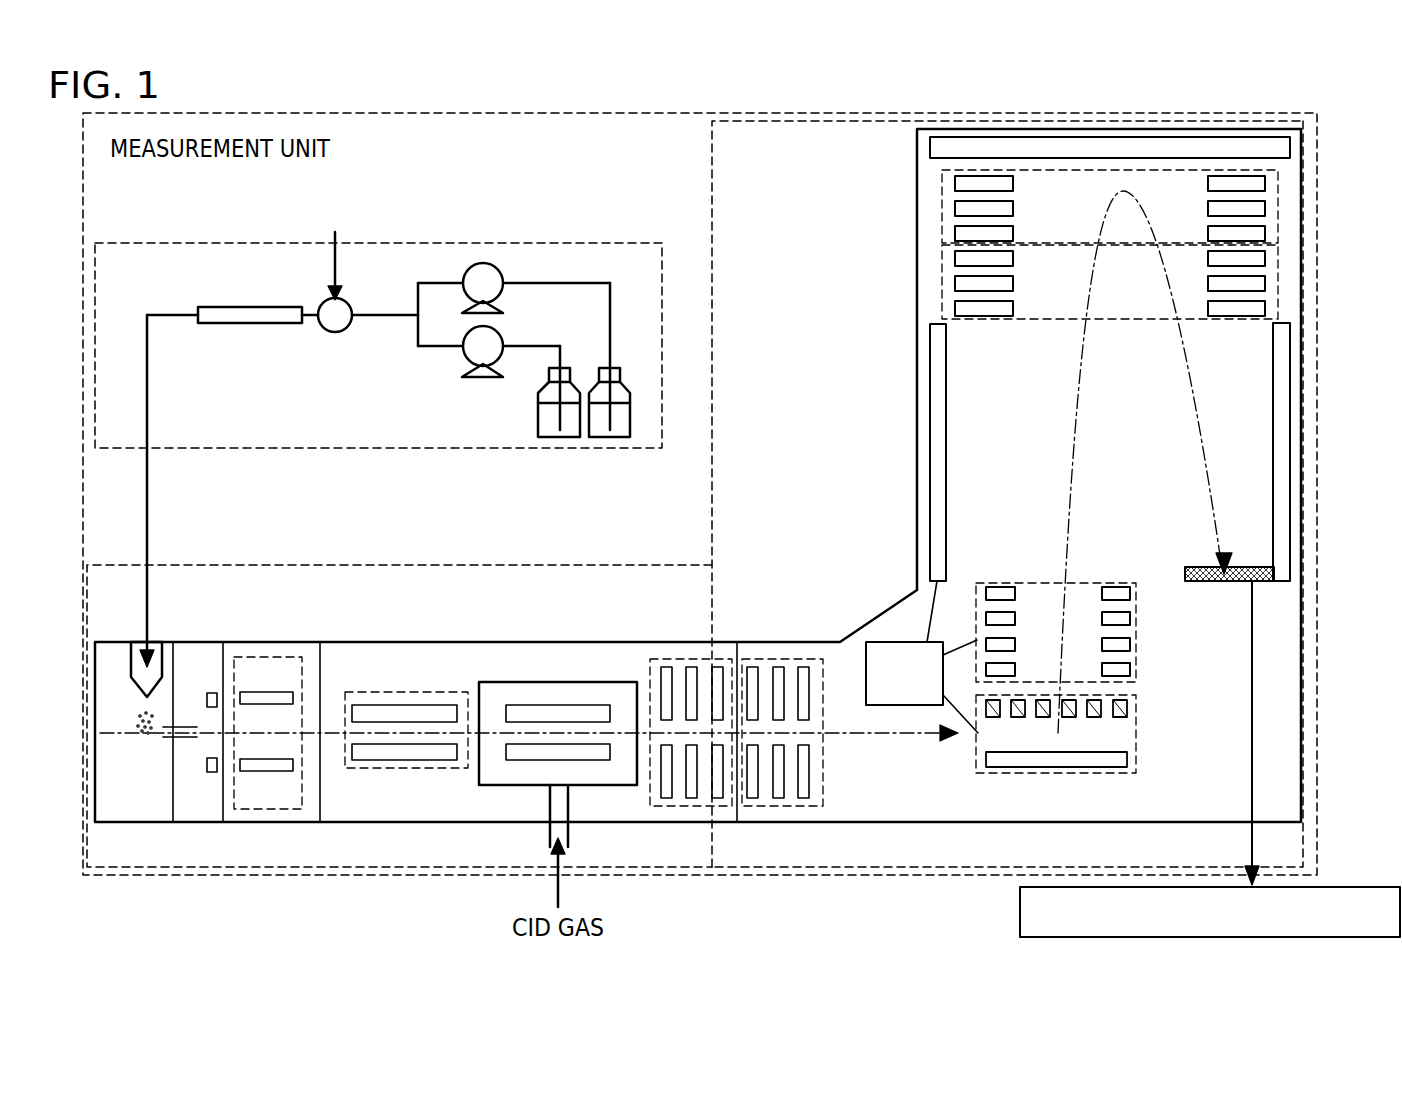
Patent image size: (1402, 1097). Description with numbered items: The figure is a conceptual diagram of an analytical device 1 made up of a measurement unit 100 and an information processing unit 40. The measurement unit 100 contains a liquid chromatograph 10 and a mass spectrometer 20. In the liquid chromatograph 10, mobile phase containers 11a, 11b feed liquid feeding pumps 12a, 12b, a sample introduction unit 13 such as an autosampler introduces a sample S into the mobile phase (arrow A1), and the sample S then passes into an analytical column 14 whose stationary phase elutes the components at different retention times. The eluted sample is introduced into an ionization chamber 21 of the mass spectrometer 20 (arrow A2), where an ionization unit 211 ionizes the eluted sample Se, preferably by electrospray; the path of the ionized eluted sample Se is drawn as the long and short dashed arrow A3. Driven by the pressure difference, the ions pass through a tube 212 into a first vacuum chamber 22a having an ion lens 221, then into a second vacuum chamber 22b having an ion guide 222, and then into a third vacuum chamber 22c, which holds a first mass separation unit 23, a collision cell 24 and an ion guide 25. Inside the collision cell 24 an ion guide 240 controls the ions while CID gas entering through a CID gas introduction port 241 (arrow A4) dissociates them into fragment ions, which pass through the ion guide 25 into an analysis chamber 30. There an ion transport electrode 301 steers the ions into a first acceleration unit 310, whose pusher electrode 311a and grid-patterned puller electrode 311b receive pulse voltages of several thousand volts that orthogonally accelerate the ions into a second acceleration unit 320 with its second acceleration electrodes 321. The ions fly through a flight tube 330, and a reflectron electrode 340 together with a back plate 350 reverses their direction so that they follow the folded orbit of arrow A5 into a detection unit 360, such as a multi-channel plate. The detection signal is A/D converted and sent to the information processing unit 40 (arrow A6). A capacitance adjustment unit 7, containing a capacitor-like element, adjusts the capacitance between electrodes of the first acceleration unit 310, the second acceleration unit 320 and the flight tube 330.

The analytical device 1 is at (1345, 778).
The measurement unit 100 is at (1307, 840).
The liquid chromatograph 10 is at (147, 243).
The mobile phase container 11a is at (560, 437).
The mobile phase container 11b is at (615, 437).
The liquid feeding pump 12a is at (485, 378).
The liquid feeding pump 12b is at (492, 280).
The sample introduction unit 13 is at (347, 324).
The analytical column 14 is at (216, 312).
The mass spectrometer 20 is at (167, 565).
The ionization chamber 21 is at (108, 638).
The ionization unit 211 is at (160, 637).
The tube 212 is at (186, 740).
The first vacuum chamber 22a is at (207, 648).
The second vacuum chamber 22b is at (268, 645).
The third vacuum chamber 22c is at (345, 650).
The ion lens 221 is at (214, 773).
The ion guide 222 is at (278, 799).
The first mass separation unit 23 is at (393, 698).
The collision cell 24 is at (505, 690).
The ion guide 240 is at (572, 710).
The CID gas introduction port 241 is at (575, 787).
The ion guide 25 is at (676, 665).
The analysis chamber 30 is at (952, 808).
The ion transport electrode 301 is at (760, 665).
The first acceleration unit 310 is at (1136, 735).
The pusher electrode 311a is at (1128, 760).
The puller electrode 311b is at (1136, 700).
The second acceleration unit 320 is at (1136, 648).
The second acceleration electrodes 321 is at (1130, 615).
The flight tube 330 is at (940, 380).
The reflectron electrode 340 is at (944, 218).
The back plate 350 is at (929, 143).
The detection unit 360 is at (1185, 572).
The capacitance adjustment unit 7 is at (910, 677).
The information processing unit 40 is at (1335, 887).
The sample S is at (335, 248).
The eluted sample Se is at (149, 735).
The arrow A1 is at (340, 262).
The arrow A2 is at (148, 488).
The arrow A3 is at (852, 737).
The arrow A4 is at (560, 893).
The arrow A5 is at (1069, 428).
The arrow A6 is at (1253, 742).